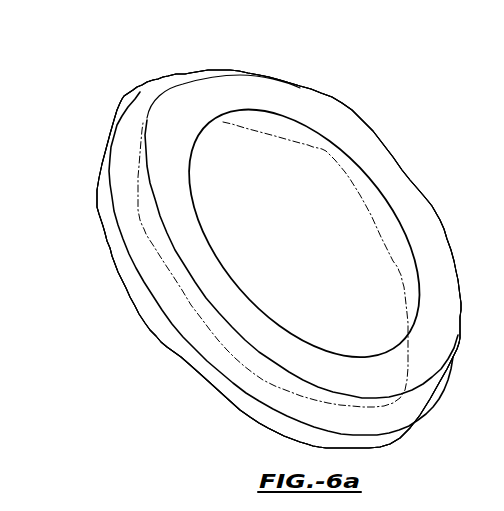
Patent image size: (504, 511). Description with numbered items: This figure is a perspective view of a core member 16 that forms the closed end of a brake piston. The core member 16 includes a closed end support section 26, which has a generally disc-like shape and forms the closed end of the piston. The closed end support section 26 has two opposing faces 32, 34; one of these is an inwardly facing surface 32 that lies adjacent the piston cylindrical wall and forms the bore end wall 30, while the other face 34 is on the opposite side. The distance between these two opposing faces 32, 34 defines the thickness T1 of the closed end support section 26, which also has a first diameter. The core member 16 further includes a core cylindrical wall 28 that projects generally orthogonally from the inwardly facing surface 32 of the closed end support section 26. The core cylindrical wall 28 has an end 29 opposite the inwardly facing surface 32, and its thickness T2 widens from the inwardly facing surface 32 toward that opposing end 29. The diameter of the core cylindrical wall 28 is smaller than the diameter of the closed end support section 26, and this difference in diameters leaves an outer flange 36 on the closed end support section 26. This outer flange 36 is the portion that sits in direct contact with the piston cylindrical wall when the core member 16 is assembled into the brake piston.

The core member 16 is at (437, 140).
The closed end support section 26 is at (190, 365).
The core cylindrical wall 28 is at (168, 135).
The end 29 is at (337, 122).
The bore end wall 30 is at (304, 211).
The inwardly facing surface 32 is at (243, 155).
The face 34 is at (97, 190).
The outer flange 36 is at (163, 97).
The thickness T1 is at (173, 270).
The thickness T2 is at (375, 248).